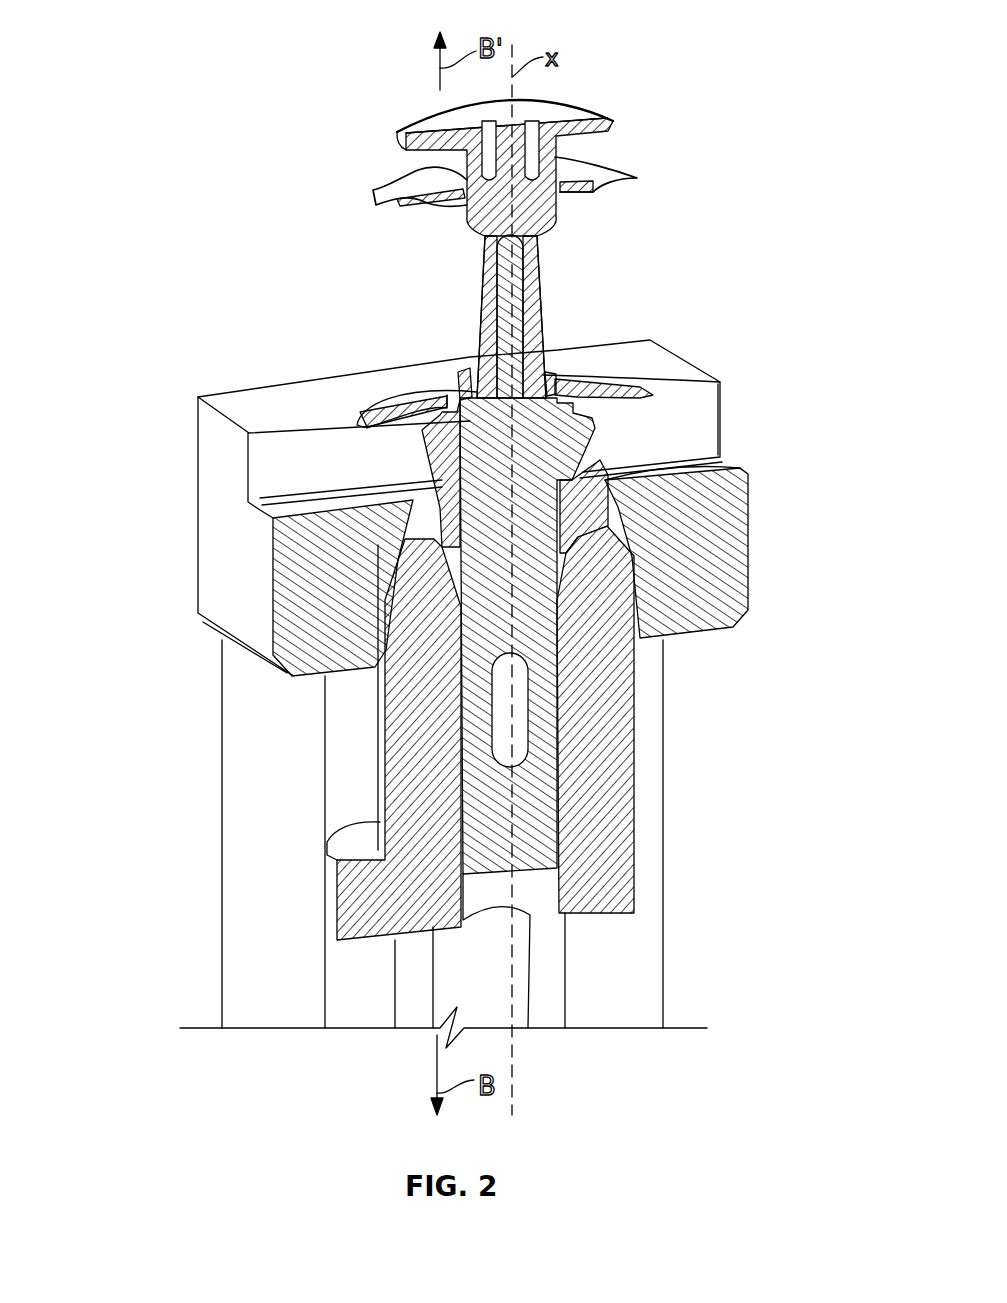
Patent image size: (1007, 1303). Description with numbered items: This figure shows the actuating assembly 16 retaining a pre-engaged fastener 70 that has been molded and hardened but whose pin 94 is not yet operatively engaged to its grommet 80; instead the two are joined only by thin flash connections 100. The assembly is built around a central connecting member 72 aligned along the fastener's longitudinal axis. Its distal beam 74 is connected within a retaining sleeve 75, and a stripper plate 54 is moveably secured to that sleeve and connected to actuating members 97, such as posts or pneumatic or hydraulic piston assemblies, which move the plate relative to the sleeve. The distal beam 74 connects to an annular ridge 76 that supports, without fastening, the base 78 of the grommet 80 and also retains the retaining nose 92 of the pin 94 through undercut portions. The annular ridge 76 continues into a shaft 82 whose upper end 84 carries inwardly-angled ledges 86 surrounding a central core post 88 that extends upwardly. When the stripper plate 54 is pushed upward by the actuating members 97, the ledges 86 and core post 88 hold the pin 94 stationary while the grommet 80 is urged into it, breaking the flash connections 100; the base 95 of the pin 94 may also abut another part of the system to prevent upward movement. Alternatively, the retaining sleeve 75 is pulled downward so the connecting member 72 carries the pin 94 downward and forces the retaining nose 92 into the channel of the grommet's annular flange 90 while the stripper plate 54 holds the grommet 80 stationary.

The actuating assembly 16 is at (178, 549).
The stripper plate 54 is at (212, 473).
The pre-engaged fastener 70 is at (590, 125).
The central connecting member 72 is at (610, 483).
The distal beam 74 is at (540, 805).
The retaining sleeve 75 is at (607, 802).
The annular ridge 76 is at (460, 553).
The base 78 is at (607, 465).
The grommet 80 is at (552, 365).
The shaft 82 is at (587, 445).
The upper end 84 is at (463, 368).
The inwardly-angled ledges 86 is at (488, 398).
The central core post 88 is at (500, 277).
The annular flange 90 is at (377, 403).
The retaining nose 92 is at (560, 352).
The pin 94 is at (548, 210).
The base 95 is at (424, 122).
The actuating members 97 is at (238, 826).
The flash connections 100 is at (470, 378).